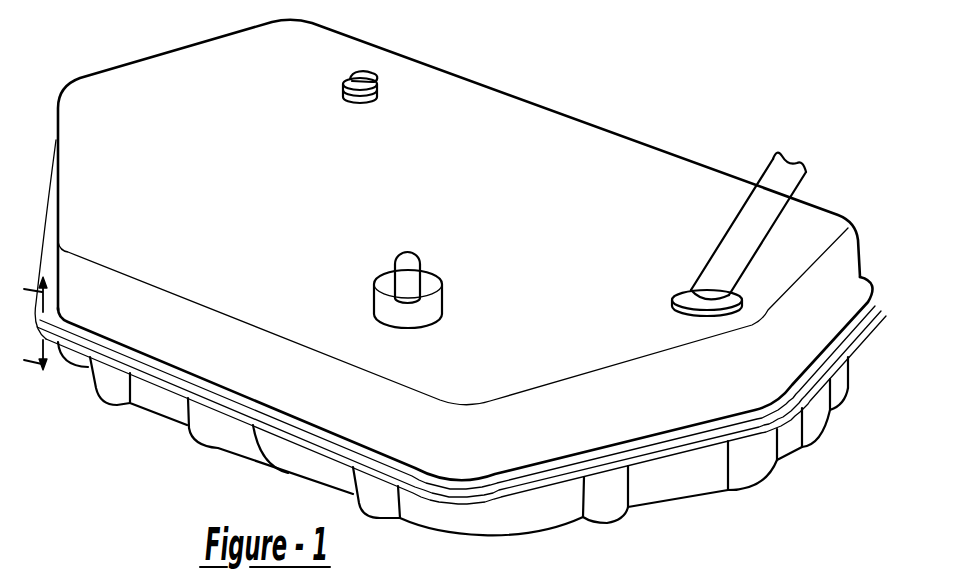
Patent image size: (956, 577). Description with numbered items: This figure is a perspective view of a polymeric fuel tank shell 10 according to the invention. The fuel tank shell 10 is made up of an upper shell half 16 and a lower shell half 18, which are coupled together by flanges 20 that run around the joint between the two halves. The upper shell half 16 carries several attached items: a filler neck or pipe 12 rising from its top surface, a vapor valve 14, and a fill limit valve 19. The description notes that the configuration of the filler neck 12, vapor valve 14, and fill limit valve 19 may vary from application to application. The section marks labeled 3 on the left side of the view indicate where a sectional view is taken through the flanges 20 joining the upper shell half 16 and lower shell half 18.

The polymeric fuel tank shell 10 is at (525, 101).
The filler neck or pipe 12 is at (773, 155).
The vapor valve 14 is at (352, 72).
The upper shell half 16 is at (88, 93).
The lower shell half 18 is at (222, 444).
The fill limit valve 19 is at (443, 283).
The flanges 20 is at (871, 278).
The section line 3- 3 is at (28, 318).